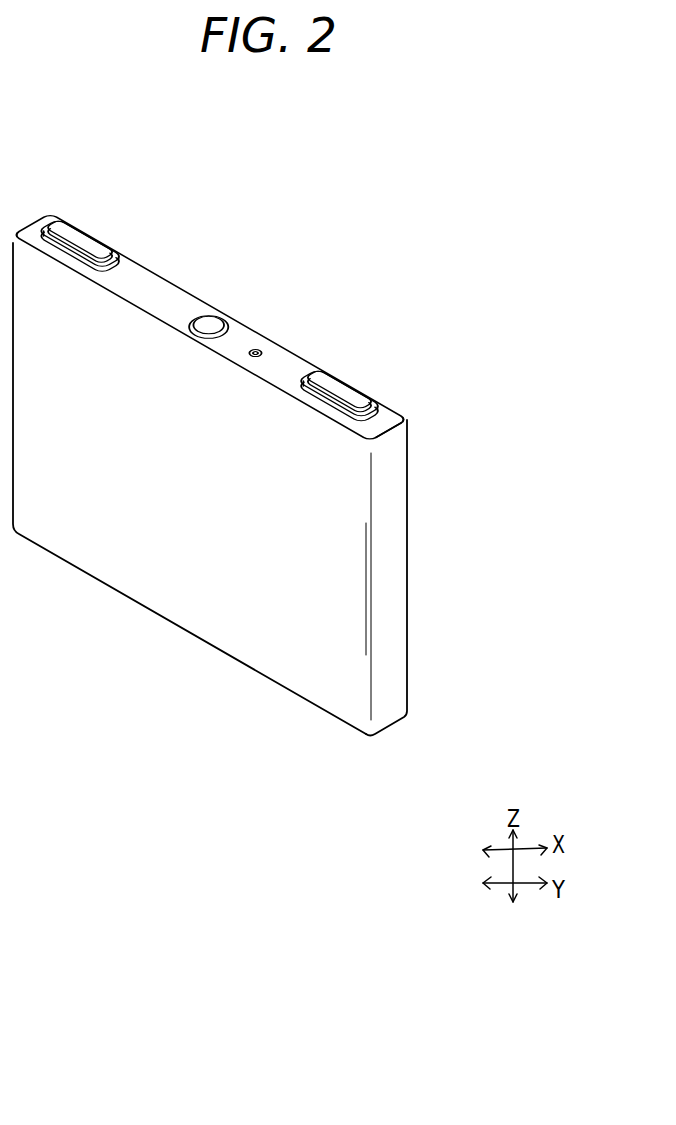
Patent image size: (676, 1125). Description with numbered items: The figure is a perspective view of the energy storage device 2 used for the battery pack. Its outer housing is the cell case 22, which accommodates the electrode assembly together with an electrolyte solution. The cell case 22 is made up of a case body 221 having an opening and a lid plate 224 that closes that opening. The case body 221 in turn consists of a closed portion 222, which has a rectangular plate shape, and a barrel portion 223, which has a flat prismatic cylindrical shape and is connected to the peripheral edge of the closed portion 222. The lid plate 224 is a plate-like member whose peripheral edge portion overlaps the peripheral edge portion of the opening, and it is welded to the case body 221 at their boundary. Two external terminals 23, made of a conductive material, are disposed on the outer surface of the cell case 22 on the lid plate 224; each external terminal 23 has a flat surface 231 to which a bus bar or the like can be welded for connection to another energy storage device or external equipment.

The energy storage device 2 is at (393, 268).
The cell case 22 is at (572, 445).
The case body 221 is at (414, 474).
The closed portion 222 is at (275, 682).
The barrel portion 223 is at (390, 673).
The lid plate 224 is at (406, 418).
The external terminal 23 is at (76, 220).
The surface 231 is at (90, 246).